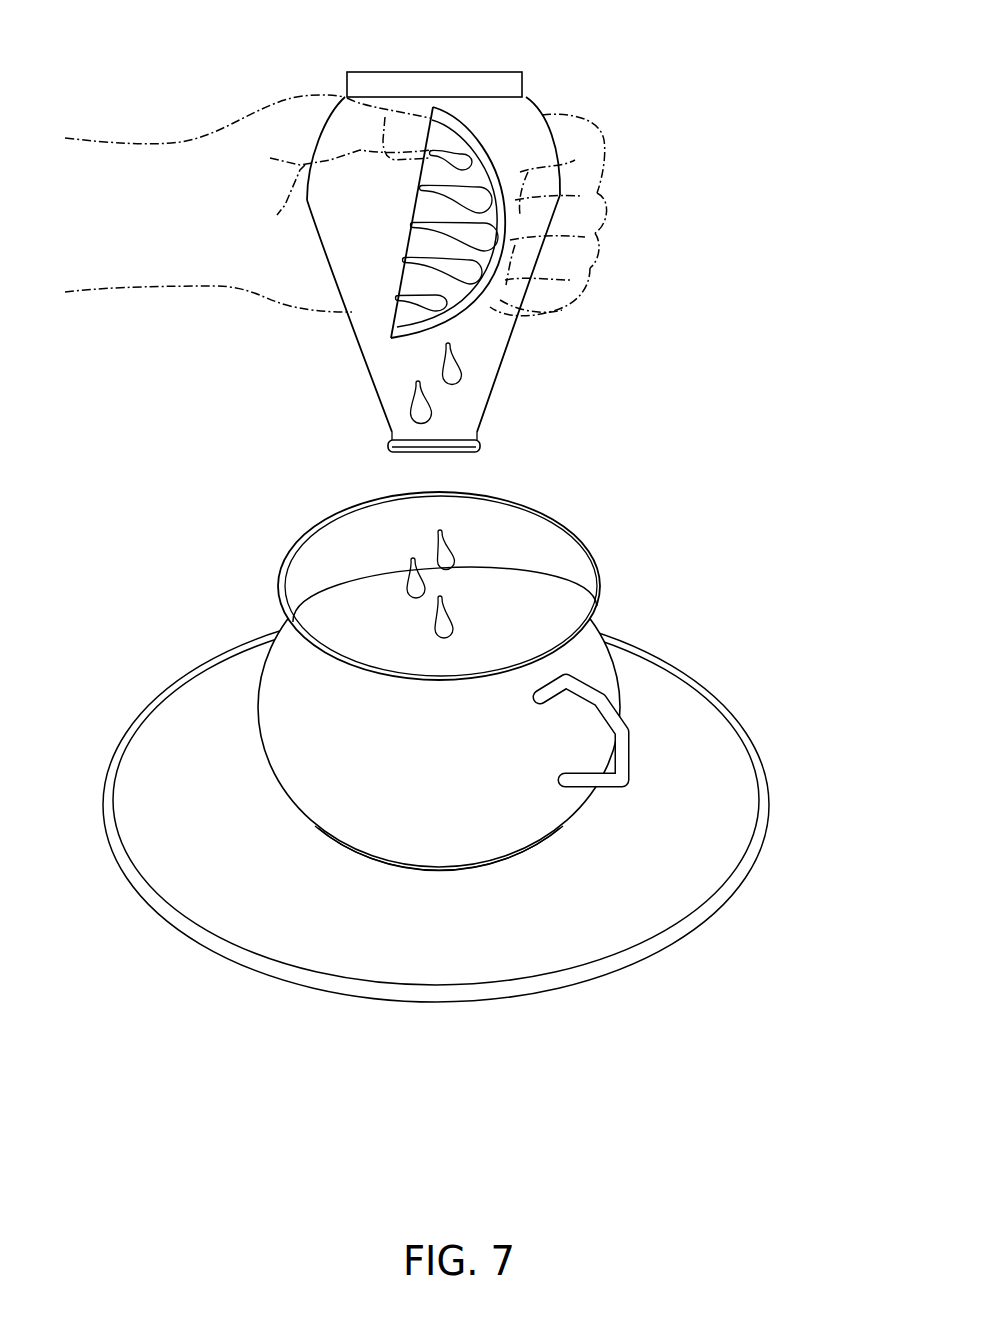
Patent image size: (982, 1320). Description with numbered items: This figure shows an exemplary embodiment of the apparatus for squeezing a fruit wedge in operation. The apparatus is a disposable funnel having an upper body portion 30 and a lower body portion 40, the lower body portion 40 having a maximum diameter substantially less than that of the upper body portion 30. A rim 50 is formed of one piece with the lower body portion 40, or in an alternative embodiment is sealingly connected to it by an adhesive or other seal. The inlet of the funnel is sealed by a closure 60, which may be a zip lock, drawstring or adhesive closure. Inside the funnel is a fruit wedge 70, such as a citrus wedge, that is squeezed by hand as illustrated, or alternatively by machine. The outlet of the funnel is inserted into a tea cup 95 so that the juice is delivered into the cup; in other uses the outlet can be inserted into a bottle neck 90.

The upper body portion 30 is at (551, 140).
The lower body portion 40 is at (487, 390).
The rim 50 is at (432, 449).
The closure 60 is at (447, 72).
The fruit wedge 70 is at (482, 133).
The neck 90 is at (543, 540).
The tea cup 95 is at (153, 617).